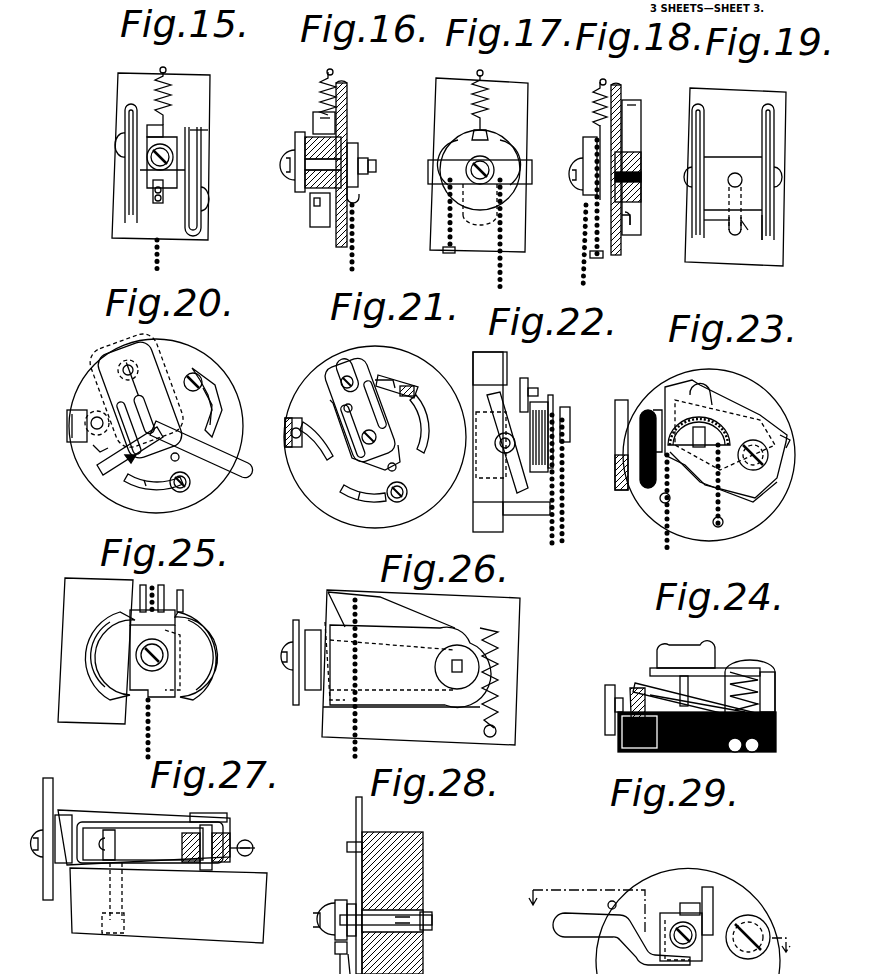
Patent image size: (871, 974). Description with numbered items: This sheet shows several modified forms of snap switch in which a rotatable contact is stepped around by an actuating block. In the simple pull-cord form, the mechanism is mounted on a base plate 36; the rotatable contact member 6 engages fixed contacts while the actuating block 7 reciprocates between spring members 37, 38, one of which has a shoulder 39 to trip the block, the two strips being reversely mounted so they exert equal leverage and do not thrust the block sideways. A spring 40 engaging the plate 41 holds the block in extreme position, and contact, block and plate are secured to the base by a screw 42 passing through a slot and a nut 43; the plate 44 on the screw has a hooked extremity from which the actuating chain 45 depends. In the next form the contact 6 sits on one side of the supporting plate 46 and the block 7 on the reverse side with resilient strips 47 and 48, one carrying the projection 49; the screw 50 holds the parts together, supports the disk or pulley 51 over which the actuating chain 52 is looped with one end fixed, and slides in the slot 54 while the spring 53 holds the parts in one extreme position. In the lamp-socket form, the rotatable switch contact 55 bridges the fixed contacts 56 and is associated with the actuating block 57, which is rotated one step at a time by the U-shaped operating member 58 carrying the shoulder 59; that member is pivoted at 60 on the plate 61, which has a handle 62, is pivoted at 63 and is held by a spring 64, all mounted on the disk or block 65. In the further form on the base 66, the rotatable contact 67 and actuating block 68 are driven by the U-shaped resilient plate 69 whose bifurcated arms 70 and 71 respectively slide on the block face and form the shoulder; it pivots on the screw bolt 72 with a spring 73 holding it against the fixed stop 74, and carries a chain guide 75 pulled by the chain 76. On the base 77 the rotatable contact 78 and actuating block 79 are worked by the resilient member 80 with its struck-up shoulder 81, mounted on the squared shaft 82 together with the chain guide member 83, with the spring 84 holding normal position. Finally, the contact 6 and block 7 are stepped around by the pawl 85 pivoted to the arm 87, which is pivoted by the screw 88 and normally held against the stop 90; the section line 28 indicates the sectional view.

In FIG. 15, the rotatable contact member 6 is at (150, 135).
In FIG. 16, the rotatable contact member 6 is at (292, 185).
In FIG. 17, the rotatable contact member 6 is at (455, 185).
In FIG. 18, the rotatable contact member 6 is at (578, 157).
In FIG. 25, the rotatable contact member 6 is at (155, 693).
In FIG. 28, the rotatable contact member 6 is at (325, 905).
In FIG. 29, the rotatable contact member 6 is at (690, 905).
In FIG. 15, the actuating block 7 is at (140, 168).
In FIG. 16, the actuating block 7 is at (297, 142).
In FIG. 18, the actuating block 7 is at (640, 140).
In FIG. 19, the actuating block 7 is at (752, 160).
In FIG. 28, the actuating block 7 is at (340, 900).
In FIG. 29, the actuating block 7 is at (667, 913).
In FIG. 29, the section line 28 is at (653, 932).
In FIG. 15, the base plate 36 is at (200, 105).
In FIG. 15, the spring member 37 is at (130, 190).
In FIG. 16, the spring member 37 is at (315, 210).
In FIG. 15, the spring member 38 is at (192, 128).
In FIG. 15, the shoulder 39 is at (130, 228).
In FIG. 16, the shoulder 39 is at (336, 232).
In FIG. 15, the spring 40 is at (160, 92).
In FIG. 16, the spring 40 is at (326, 100).
In FIG. 16, the plate 41 is at (315, 125).
In FIG. 16, the screw 42 is at (368, 160).
In FIG. 16, the nut 43 is at (358, 148).
In FIG. 16, the plate 44 is at (360, 190).
In FIG. 16, the actuating chain 45 is at (356, 227).
In FIG. 18, the supporting plate 46 is at (618, 92).
In FIG. 19, the supporting plate 46 is at (753, 262).
In FIG. 18, the resilient strip 47 is at (638, 118).
In FIG. 19, the resilient strip 47 is at (767, 200).
In FIG. 18, the resilient strip 48 is at (628, 232).
In FIG. 19, the resilient strip 48 is at (700, 222).
In FIG. 18, the projection 49 is at (640, 222).
In FIG. 19, the projection 49 is at (755, 218).
In FIG. 18, the screw 50 is at (640, 170).
In FIG. 19, the screw 50 is at (733, 175).
In FIG. 17, the disk or pulley 51 is at (478, 240).
In FIG. 18, the disk or pulley 51 is at (598, 127).
In FIG. 17, the actuating chain 52 is at (505, 240).
In FIG. 18, the actuating chain 52 is at (582, 240).
In FIG. 17, the spring 53 is at (470, 97).
In FIG. 18, the spring 53 is at (598, 96).
In FIG. 17, the slot 54 is at (495, 222).
In FIG. 18, the slot 54 is at (592, 215).
In FIG. 19, the slot 54 is at (727, 222).
In FIG. 20, the rotatable switch contact 55 is at (212, 392).
In FIG. 21, the rotatable switch contact 55 is at (325, 462).
In FIG. 21, the fixed contacts 56 is at (412, 378).
In FIG. 20, the actuating block 57 is at (110, 482).
In FIG. 21, the actuating block 57 is at (369, 445).
In FIG. 20, the operating member 58 is at (100, 462).
In FIG. 21, the operating member 58 is at (380, 365).
In FIG. 21, the shoulder 59 is at (420, 388).
In FIG. 20, the pivot 60 is at (123, 370).
In FIG. 21, the pivot 60 is at (345, 377).
In FIG. 20, the plate 61 is at (160, 370).
In FIG. 20, the handle 62 is at (240, 468).
In FIG. 20, the pivot 63 is at (92, 415).
In FIG. 20, the spring 64 is at (70, 442).
In FIG. 20, the disk or block 65 is at (205, 490).
In FIG. 21, the disk or block 65 is at (350, 515).
In FIG. 22, the base 66 is at (507, 363).
In FIG. 23, the base 66 is at (760, 522).
In FIG. 24, the base 66 is at (770, 742).
In FIG. 22, the rotatable contact 67 is at (571, 426).
In FIG. 23, the rotatable contact 67 is at (632, 430).
In FIG. 24, the rotatable contact 67 is at (605, 705).
In FIG. 22, the actuating block 68 is at (551, 395).
In FIG. 23, the actuating block 68 is at (645, 490).
In FIG. 24, the actuating block 68 is at (615, 692).
In FIG. 22, the resilient plate 69 is at (553, 397).
In FIG. 23, the resilient plate 69 is at (778, 476).
In FIG. 24, the resilient plate 69 is at (770, 690).
In FIG. 22, the resilient arm 70 is at (570, 410).
In FIG. 23, the resilient arm 70 is at (653, 412).
In FIG. 24, the resilient arm 70 is at (635, 690).
In FIG. 22, the resilient arm 71 is at (524, 400).
In FIG. 23, the resilient arm 71 is at (665, 395).
In FIG. 24, the resilient arm 71 is at (650, 690).
In FIG. 23, the screw bolt 72 is at (768, 490).
In FIG. 24, the screw bolt 72 is at (762, 662).
In FIG. 23, the spring 73 is at (763, 428).
In FIG. 24, the spring 73 is at (745, 675).
In FIG. 23, the fixed stop 74 is at (703, 388).
In FIG. 23, the chain guide 75 is at (665, 403).
In FIG. 24, the chain guide 75 is at (670, 648).
In FIG. 22, the chain 76 is at (565, 488).
In FIG. 23, the chain 76 is at (665, 548).
In FIG. 25, the base 77 is at (68, 590).
In FIG. 26, the base 77 is at (520, 625).
In FIG. 27, the base 77 is at (195, 938).
In FIG. 25, the rotatable contact 78 is at (205, 640).
In FIG. 26, the rotatable contact 78 is at (294, 690).
In FIG. 27, the rotatable contact 78 is at (45, 875).
In FIG. 26, the actuating block 79 is at (305, 705).
In FIG. 27, the actuating block 79 is at (57, 870).
In FIG. 26, the resilient member 80 is at (430, 640).
In FIG. 27, the resilient member 80 is at (115, 818).
In FIG. 26, the shoulder 81 is at (330, 612).
In FIG. 27, the shoulder 81 is at (75, 822).
In FIG. 26, the squared shaft 82 is at (455, 672).
In FIG. 27, the squared shaft 82 is at (218, 862).
In FIG. 25, the chain guide member 83 is at (168, 592).
In FIG. 27, the chain guide member 83 is at (163, 855).
In FIG. 26, the spring 84 is at (500, 665).
In FIG. 27, the spring 84 is at (250, 843).
In FIG. 28, the pawl 85 is at (335, 946).
In FIG. 29, the pawl 85 is at (712, 897).
In FIG. 28, the arm 87 is at (356, 820).
In FIG. 29, the arm 87 is at (578, 925).
In FIG. 28, the screw 88 is at (423, 950).
In FIG. 29, the screw 88 is at (748, 920).
In FIG. 28, the stop 90 is at (347, 846).
In FIG. 29, the stop 90 is at (610, 900).